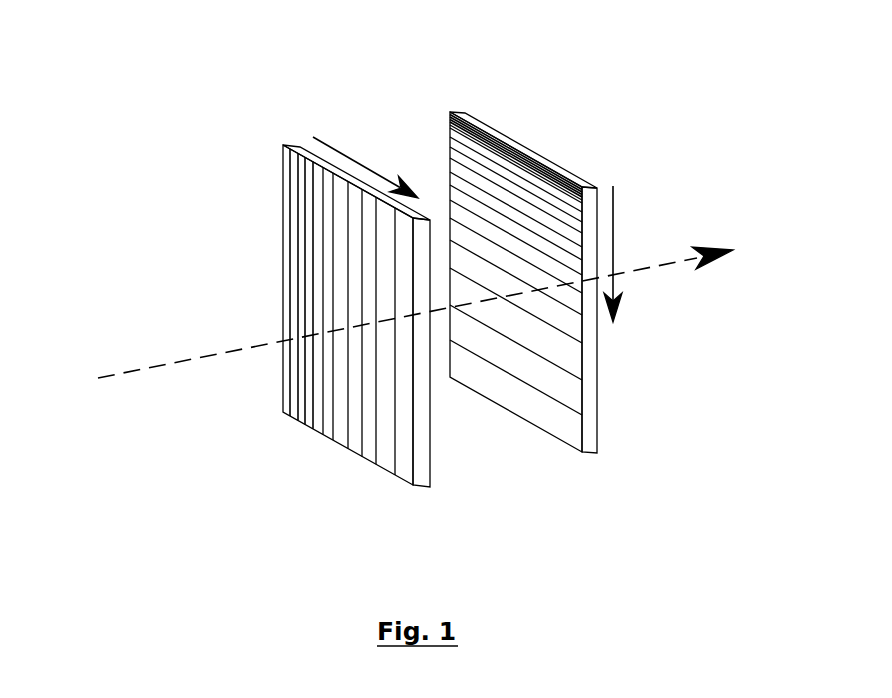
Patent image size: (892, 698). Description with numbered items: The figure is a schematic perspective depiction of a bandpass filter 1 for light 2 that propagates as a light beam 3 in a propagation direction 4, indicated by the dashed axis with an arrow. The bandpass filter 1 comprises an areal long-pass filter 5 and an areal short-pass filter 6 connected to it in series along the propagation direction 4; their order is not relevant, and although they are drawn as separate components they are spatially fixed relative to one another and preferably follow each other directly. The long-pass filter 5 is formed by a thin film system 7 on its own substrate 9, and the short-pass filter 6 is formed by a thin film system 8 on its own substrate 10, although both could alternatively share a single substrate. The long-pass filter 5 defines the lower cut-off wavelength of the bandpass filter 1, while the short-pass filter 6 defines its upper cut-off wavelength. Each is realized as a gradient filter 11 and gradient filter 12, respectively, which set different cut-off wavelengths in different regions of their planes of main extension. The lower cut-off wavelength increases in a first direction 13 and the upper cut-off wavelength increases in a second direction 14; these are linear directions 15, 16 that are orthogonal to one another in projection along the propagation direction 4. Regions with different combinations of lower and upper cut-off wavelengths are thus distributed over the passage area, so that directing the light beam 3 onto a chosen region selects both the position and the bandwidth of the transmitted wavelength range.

The bandpass filter 1 is at (516, 102).
The light 2 is at (397, 375).
The light beam 3 is at (168, 368).
The propagation direction 4 is at (715, 263).
The long-pass filter 5 is at (384, 366).
The short-pass filter 6 is at (568, 334).
The thin film system 7 is at (352, 432).
The thin film system 8 is at (568, 382).
The substrate 9 is at (423, 458).
The substrate 10 is at (587, 423).
The gradient filter 11 is at (384, 366).
The gradient filter 12 is at (568, 334).
The first direction 13 is at (371, 134).
The second direction 14 is at (680, 254).
The linear direction 15 is at (357, 162).
The linear direction 16 is at (613, 232).